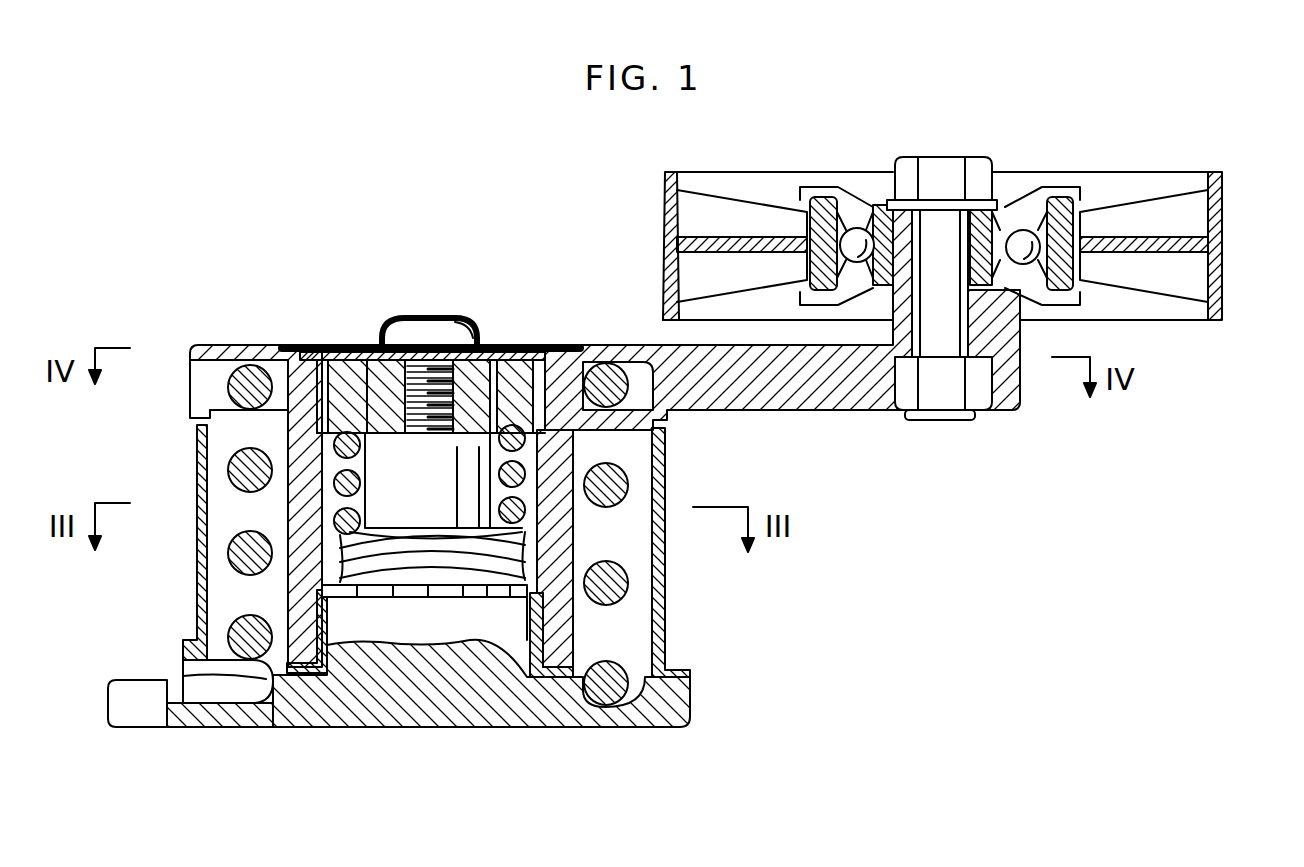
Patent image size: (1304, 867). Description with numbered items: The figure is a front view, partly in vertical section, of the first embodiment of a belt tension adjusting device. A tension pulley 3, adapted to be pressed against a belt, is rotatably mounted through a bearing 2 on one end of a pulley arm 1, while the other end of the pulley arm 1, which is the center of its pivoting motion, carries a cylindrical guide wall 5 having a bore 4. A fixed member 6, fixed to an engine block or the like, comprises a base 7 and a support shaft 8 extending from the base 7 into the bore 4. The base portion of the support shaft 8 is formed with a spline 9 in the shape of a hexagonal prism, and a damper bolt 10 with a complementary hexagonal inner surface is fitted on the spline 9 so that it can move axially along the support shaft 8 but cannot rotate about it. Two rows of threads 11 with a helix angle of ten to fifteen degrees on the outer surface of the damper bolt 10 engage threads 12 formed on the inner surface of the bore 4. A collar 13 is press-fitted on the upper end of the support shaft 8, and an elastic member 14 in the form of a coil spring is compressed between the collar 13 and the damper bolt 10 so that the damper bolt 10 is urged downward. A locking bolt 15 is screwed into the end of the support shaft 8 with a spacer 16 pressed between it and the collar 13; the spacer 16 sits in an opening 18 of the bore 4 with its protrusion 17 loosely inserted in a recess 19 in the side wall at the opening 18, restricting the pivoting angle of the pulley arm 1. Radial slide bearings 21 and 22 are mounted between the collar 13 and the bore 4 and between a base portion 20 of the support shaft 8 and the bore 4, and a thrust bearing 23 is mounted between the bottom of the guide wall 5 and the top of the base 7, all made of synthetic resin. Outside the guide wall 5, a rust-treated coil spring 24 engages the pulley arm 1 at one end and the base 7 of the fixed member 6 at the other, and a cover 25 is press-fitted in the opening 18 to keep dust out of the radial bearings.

The pulley arm 1 is at (800, 392).
The bearing 2 is at (1062, 212).
The tension pulley 3 is at (1222, 250).
The bore 4 is at (522, 446).
The cylindrical guide wall 5 is at (557, 482).
The fixed member 6 is at (313, 738).
The base 7 is at (237, 716).
The support shaft 8 is at (327, 507).
The spline 9 is at (413, 598).
The damper bolt 10 is at (495, 582).
The threads 11 is at (440, 538).
The threads 12 is at (575, 609).
The collar 13 is at (513, 343).
The elastic member 14 is at (341, 343).
The locking bolt 15 is at (415, 332).
The spacer 16 is at (490, 343).
The protrusion 17 is at (316, 343).
The opening 18 is at (583, 343).
The recess 19 is at (281, 343).
The base portion 20 is at (387, 628).
The bearing 21 is at (290, 398).
The bearing 22 is at (330, 600).
The bearing 23 is at (273, 672).
The coil spring 24 is at (575, 567).
The cover 25 is at (450, 318).